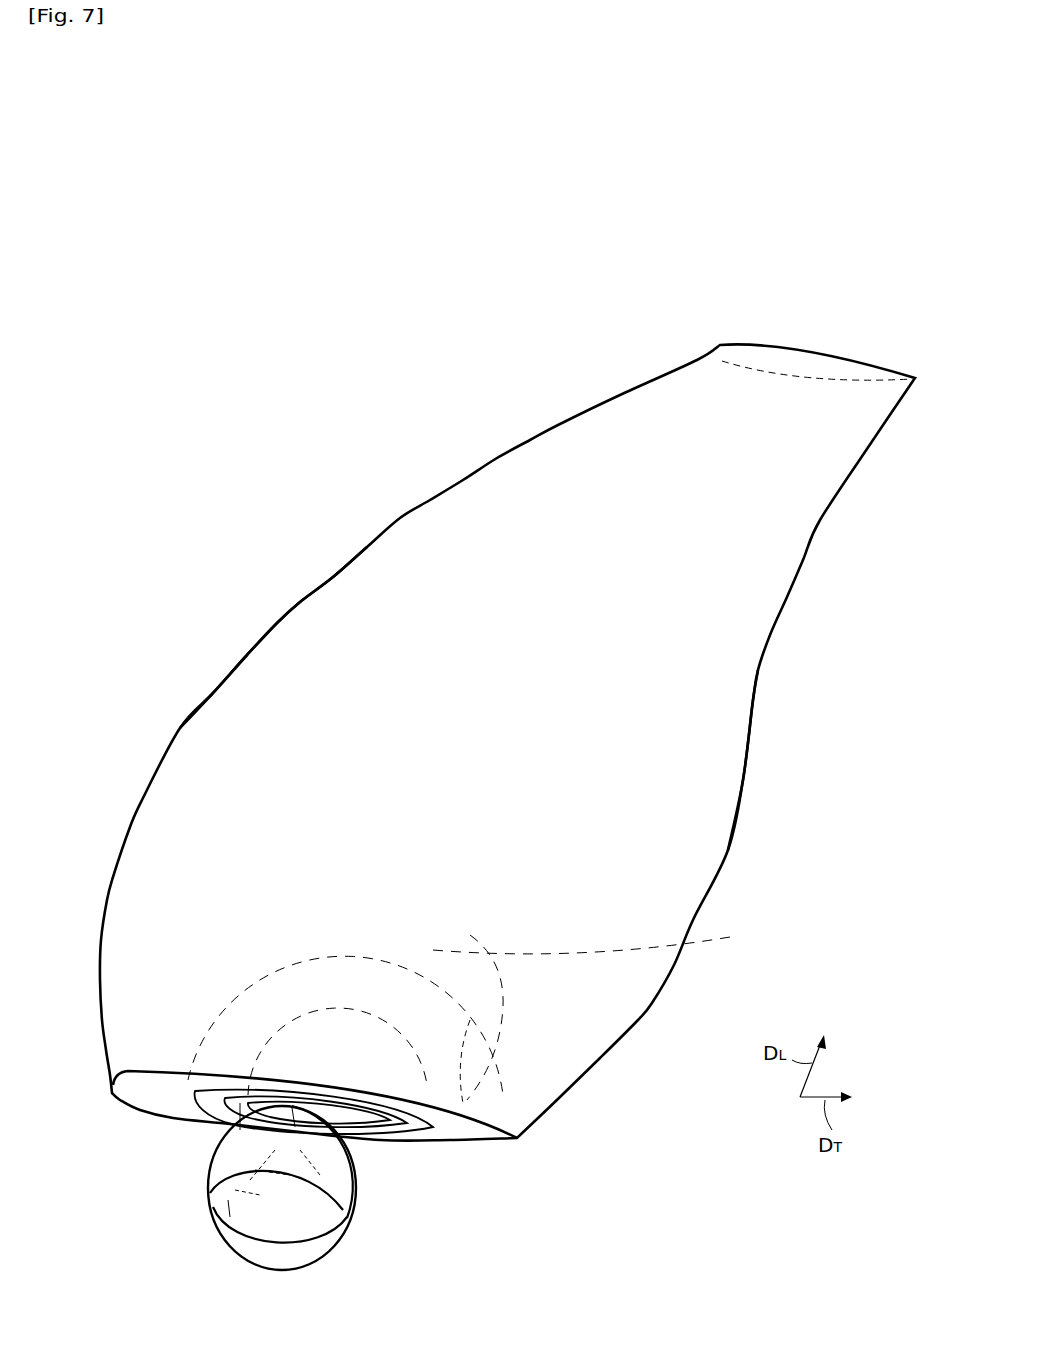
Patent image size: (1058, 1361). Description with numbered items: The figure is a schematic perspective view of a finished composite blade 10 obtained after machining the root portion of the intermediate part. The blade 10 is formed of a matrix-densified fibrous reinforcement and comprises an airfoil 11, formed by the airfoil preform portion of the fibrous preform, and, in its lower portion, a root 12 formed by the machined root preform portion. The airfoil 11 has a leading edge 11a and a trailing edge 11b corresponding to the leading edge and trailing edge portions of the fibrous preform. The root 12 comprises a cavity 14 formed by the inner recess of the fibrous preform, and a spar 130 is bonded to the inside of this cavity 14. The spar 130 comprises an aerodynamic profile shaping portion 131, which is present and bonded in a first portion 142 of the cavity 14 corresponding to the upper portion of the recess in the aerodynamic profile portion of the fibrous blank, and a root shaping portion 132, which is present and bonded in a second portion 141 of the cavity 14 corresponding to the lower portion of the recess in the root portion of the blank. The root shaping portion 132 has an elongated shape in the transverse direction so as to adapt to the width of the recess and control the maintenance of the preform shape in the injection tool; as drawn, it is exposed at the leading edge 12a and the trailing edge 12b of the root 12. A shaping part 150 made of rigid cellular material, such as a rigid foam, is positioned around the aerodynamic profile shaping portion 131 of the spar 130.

The blade 10 is at (330, 387).
The airfoil 11 is at (657, 715).
The leading edge 11a is at (277, 622).
The trailing edge 11b is at (747, 775).
The root 12 is at (327, 1260).
The leading edge of the root 12a is at (210, 1197).
The trailing edge of the root 12b is at (357, 1207).
The cavity 14 is at (210, 1215).
The spar 130 is at (275, 1224).
The aerodynamic profile shaping portion 131 is at (600, 939).
The root shaping portion 132 is at (360, 1177).
The second portion of the cavity 141 is at (223, 1153).
The first portion of the cavity 142 is at (243, 952).
The shaping part 150 is at (503, 1007).